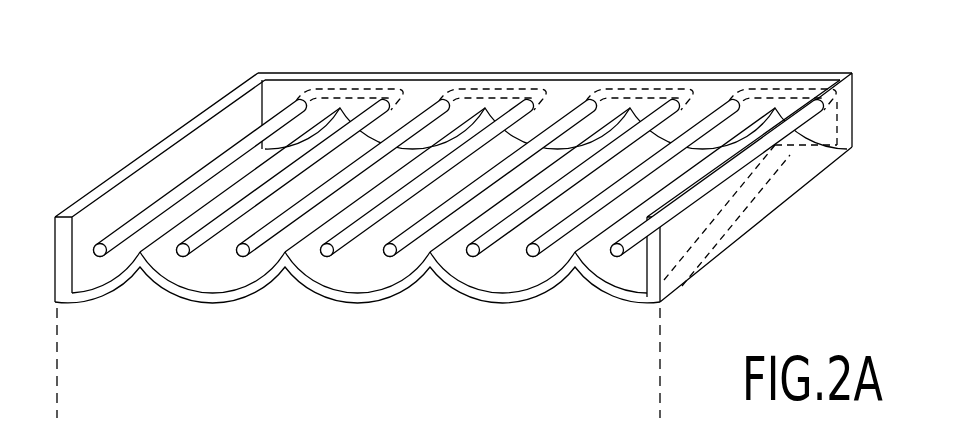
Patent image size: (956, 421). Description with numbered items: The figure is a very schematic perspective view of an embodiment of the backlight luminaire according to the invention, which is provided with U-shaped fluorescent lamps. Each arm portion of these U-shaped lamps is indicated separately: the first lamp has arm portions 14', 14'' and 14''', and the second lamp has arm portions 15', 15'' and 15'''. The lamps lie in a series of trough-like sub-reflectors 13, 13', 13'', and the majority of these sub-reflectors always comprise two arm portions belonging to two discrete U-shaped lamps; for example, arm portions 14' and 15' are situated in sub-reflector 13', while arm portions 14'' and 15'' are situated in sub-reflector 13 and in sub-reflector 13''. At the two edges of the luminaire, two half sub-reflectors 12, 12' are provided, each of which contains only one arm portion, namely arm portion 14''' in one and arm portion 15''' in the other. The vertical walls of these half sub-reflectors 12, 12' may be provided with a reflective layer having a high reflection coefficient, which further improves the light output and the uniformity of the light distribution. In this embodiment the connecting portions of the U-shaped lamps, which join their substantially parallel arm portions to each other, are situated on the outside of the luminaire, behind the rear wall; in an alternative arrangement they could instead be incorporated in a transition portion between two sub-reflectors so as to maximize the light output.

The half sub-reflector 12 is at (160, 219).
The half sub-reflector 12' is at (723, 219).
The sub-reflector 13 is at (212, 309).
The sub-reflector 13' is at (357, 309).
The sub-reflector 13'' is at (502, 309).
The arm portion 14' is at (489, 137).
The arm portion 14'' is at (421, 137).
The arm portion 14''' is at (199, 176).
The arm portion 15' is at (426, 137).
The arm portion 15'' is at (533, 137).
The arm portion 15''' is at (723, 193).